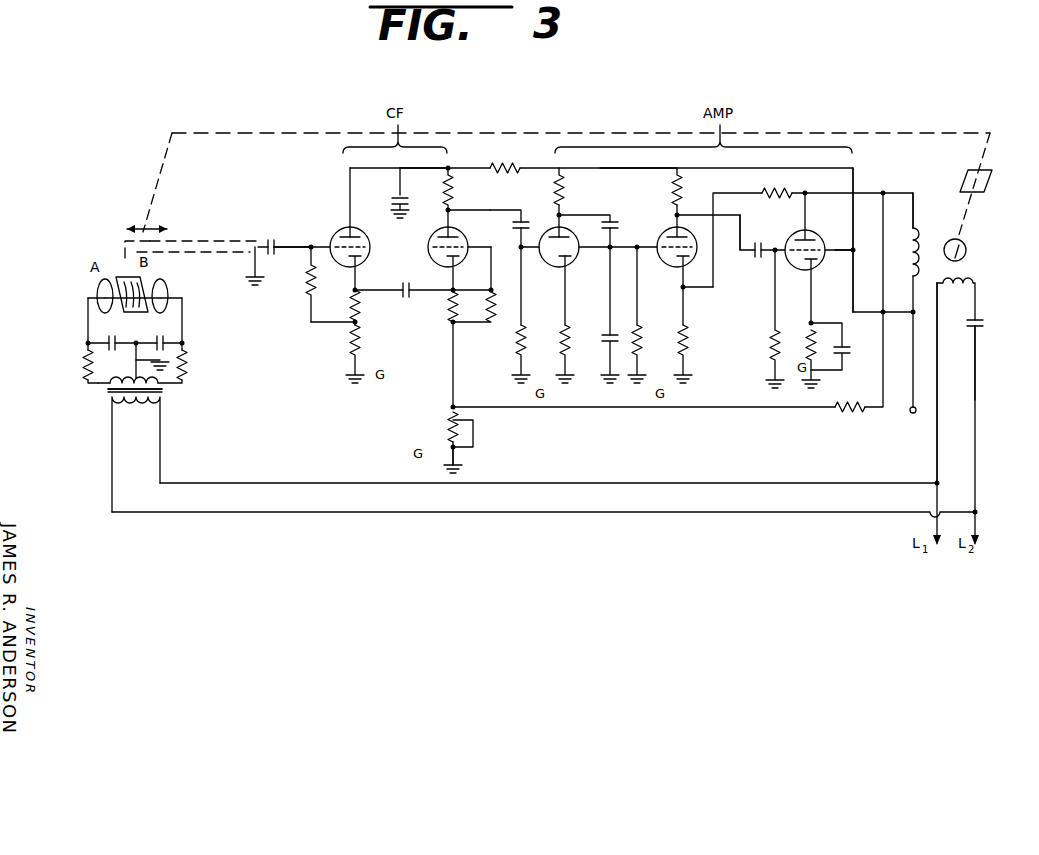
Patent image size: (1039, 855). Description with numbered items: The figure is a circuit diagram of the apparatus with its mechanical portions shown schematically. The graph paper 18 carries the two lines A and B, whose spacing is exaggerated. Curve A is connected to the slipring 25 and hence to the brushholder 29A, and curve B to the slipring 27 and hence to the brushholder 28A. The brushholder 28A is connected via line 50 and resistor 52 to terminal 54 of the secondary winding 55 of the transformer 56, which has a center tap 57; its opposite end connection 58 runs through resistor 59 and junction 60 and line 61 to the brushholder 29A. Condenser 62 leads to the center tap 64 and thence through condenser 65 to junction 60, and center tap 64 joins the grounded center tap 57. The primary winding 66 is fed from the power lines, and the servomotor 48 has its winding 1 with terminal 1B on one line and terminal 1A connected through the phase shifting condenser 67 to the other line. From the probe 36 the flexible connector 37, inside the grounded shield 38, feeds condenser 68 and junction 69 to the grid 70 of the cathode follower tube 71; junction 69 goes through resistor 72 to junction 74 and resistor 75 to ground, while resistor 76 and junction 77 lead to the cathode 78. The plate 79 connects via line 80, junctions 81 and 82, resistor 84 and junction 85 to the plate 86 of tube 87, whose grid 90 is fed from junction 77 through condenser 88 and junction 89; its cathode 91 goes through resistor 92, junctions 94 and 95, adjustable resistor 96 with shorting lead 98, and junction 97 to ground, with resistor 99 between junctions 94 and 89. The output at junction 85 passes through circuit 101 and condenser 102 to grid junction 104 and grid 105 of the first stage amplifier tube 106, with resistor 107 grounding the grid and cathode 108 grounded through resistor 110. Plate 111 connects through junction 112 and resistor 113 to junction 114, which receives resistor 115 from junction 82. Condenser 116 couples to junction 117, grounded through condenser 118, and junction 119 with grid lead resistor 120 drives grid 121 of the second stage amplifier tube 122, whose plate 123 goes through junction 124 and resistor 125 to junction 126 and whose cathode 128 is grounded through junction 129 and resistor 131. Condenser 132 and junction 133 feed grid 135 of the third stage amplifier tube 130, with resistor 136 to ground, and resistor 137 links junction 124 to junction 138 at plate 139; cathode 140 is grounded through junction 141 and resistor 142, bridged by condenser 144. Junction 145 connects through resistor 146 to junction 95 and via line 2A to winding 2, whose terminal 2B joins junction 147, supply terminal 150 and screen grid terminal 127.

The winding 1 is at (962, 280).
The terminal 1A is at (984, 318).
The terminal 1B is at (938, 345).
The winding 2 is at (912, 250).
The line 2A is at (914, 208).
The terminal 2B is at (912, 302).
The graph paper 18 is at (147, 282).
The slipring 25 is at (97, 284).
The slipring 27 is at (170, 290).
The brushholder 28A is at (182, 298).
The brushholder 29A is at (88, 298).
The probe 36 is at (122, 270).
The flexible connector 37 is at (268, 238).
The metallic grounded shield 38 is at (186, 240).
The servomotor 48 is at (967, 251).
The line 50 is at (186, 322).
The resistor 52 is at (188, 362).
The terminal 54 is at (186, 385).
The secondary winding 55 is at (108, 384).
The transformer 56 is at (165, 393).
The center tap 57 is at (136, 376).
The end connection 58 is at (88, 382).
The resistor 59 is at (84, 363).
The junction 60 is at (86, 343).
The line 61 is at (88, 323).
The condenser 62 is at (168, 341).
The center tap 64 is at (168, 325).
The condenser 65 is at (122, 325).
The primary winding 66 is at (126, 402).
The condenser 67 is at (983, 330).
The condenser 68 is at (276, 242).
The junction 69 is at (259, 268).
The grid 70 is at (367, 243).
The cathode follower tube 71 is at (350, 236).
The resistor 72 is at (306, 301).
The junction 74 is at (358, 323).
The resistor 75 is at (350, 345).
The resistor 76 is at (350, 312).
The junction 77 is at (358, 291).
The cathode 78 is at (364, 260).
The plate 79 is at (341, 233).
The line 80 is at (348, 168).
The junction 81 is at (400, 167).
The junction 82 is at (448, 167).
The resistor 84 is at (443, 191).
The junction 85 is at (452, 209).
The plate 86 is at (459, 236).
The cathode follower tube 87 is at (469, 242).
The condenser 88 is at (402, 295).
The junction 89 is at (491, 288).
The grid 90 is at (457, 264).
The cathode 91 is at (446, 262).
The resistor 92 is at (448, 310).
The junction 94 is at (455, 340).
The junction 95 is at (452, 402).
The resistor 96 is at (449, 420).
The junction 97 is at (450, 443).
The shorting lead 98 is at (458, 429).
The resistor 99 is at (494, 316).
The circuit 101 is at (493, 209).
The condenser 102 is at (530, 214).
The grid junction 104 is at (522, 253).
The grid 105 is at (562, 259).
The first stage amplifier tube 106 is at (571, 258).
The resistor 107 is at (524, 332).
The cathode 108 is at (567, 276).
The resistor 110 is at (568, 332).
The plate 111 is at (562, 236).
The junction 112 is at (563, 214).
The resistor 113 is at (565, 186).
The junction 114 is at (557, 167).
The resistor 115 is at (504, 168).
The condenser 116 is at (613, 222).
The junction 117 is at (610, 258).
The condenser 118 is at (610, 333).
The junction 119 is at (638, 258).
The grid lead resistor 120 is at (640, 332).
The grid 121 is at (658, 244).
The second stage amplifier tube 122 is at (690, 287).
The plate 123 is at (675, 215).
The junction 124 is at (681, 192).
The resistor 125 is at (671, 188).
The junction 126 is at (677, 167).
The screen grid terminal 127 is at (855, 248).
The cathode 128 is at (670, 270).
The junction 129 is at (686, 292).
The third stage amplifier tube 130 is at (812, 269).
The resistor 131 is at (688, 345).
The condenser 132 is at (758, 248).
The junction 133 is at (756, 258).
The grid 135 is at (792, 267).
The resistor 136 is at (772, 345).
The resistor 137 is at (780, 192).
The junction 138 is at (790, 196).
The plate 139 is at (808, 238).
The cathode 140 is at (814, 262).
The junction 141 is at (843, 324).
The resistor 142 is at (808, 332).
The condenser 144 is at (844, 358).
The junction 145 is at (883, 192).
The resistor 146 is at (845, 412).
The junction 147 is at (912, 316).
The supply terminal 150 is at (910, 413).